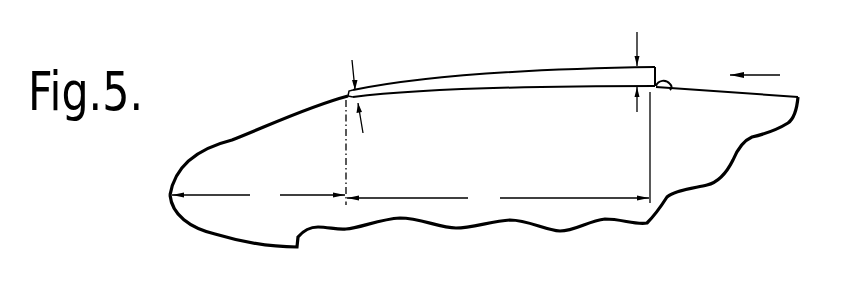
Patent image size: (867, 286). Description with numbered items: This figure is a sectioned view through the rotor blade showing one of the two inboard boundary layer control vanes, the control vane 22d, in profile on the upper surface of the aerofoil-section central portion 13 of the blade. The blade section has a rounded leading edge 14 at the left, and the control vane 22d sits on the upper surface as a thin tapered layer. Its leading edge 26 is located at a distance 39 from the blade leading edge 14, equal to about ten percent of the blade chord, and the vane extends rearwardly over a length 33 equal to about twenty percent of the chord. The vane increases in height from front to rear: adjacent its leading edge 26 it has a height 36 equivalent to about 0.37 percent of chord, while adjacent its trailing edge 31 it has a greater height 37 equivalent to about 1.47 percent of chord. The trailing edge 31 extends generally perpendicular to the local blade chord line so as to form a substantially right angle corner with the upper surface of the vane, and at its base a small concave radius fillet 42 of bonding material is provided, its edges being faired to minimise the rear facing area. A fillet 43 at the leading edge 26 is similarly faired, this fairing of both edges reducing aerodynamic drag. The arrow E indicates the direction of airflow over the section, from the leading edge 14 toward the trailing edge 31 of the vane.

The central portion 13 is at (578, 151).
The inboard control vane 22d is at (512, 74).
The height adjacent leading edge 36 is at (358, 90).
The leading edge 26 is at (348, 93).
The fillet 43 is at (347, 95).
The height adjacent trailing edge 37 is at (651, 66).
The trailing edge 31 is at (657, 73).
The concave radius fillet 42 is at (670, 91).
The leading edge 14 is at (170, 200).
The distance 39 is at (259, 155).
The length 33 is at (498, 153).
The direction of flow E is at (768, 75).